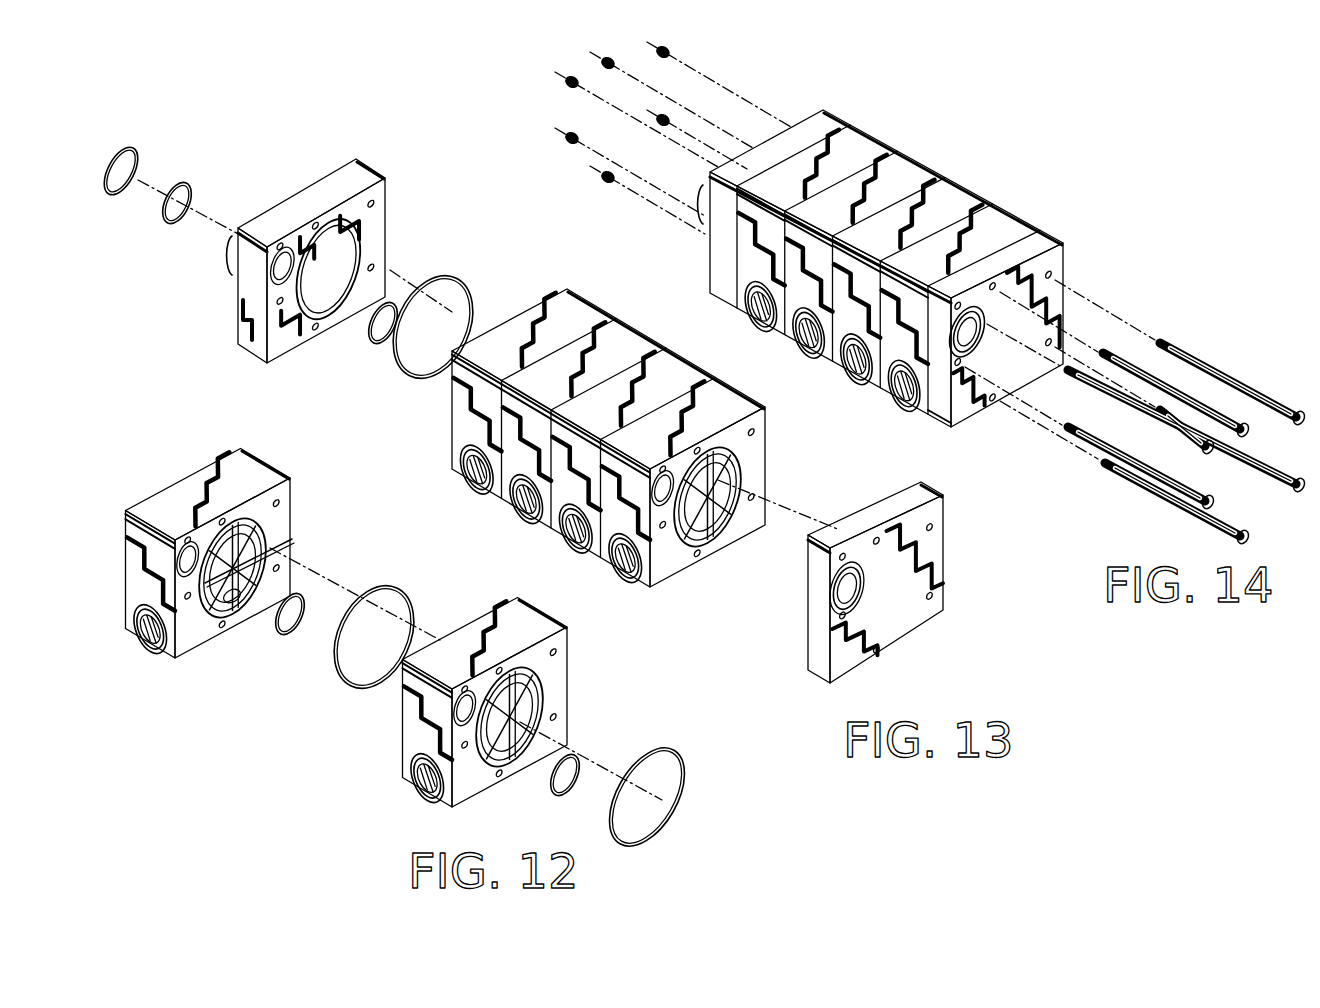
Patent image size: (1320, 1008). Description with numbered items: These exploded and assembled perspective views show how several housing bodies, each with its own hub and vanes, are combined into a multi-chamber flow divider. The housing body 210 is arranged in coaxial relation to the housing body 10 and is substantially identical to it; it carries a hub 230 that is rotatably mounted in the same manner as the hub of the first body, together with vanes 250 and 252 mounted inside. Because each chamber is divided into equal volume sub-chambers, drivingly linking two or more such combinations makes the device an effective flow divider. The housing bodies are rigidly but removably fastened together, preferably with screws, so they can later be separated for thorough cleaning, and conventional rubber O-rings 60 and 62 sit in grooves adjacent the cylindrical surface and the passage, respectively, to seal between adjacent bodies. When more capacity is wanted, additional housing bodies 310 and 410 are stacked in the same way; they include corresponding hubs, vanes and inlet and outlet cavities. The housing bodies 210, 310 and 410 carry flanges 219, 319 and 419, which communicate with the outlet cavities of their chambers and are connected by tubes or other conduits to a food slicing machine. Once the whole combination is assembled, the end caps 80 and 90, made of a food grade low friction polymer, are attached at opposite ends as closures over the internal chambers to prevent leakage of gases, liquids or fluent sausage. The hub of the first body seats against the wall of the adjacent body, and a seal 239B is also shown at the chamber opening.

In FIG. 12, the housing body 10 is at (418, 738).
In FIG. 13, the housing body 10 is at (598, 407).
In FIG. 12, the O-ring 60 is at (404, 587).
In FIG. 12, the O-ring 62 is at (288, 634).
In FIG. 13, the end cap 80 is at (330, 187).
In FIG. 13, the end cap 90 is at (813, 650).
In FIG. 12, the housing body 210 is at (148, 495).
In FIG. 13, the housing body 210 is at (670, 365).
In FIG. 12, the flange 219 is at (150, 650).
In FIG. 12, the hub 230 is at (222, 612).
In FIG. 12, the seal 239B is at (258, 553).
In FIG. 12, the vane 250 is at (278, 571).
In FIG. 12, the vane 252 is at (230, 597).
In FIG. 13, the housing body 310 is at (625, 335).
In FIG. 13, the flange 319 is at (512, 504).
In FIG. 13, the housing body 410 is at (573, 303).
In FIG. 13, the flange 419 is at (456, 452).